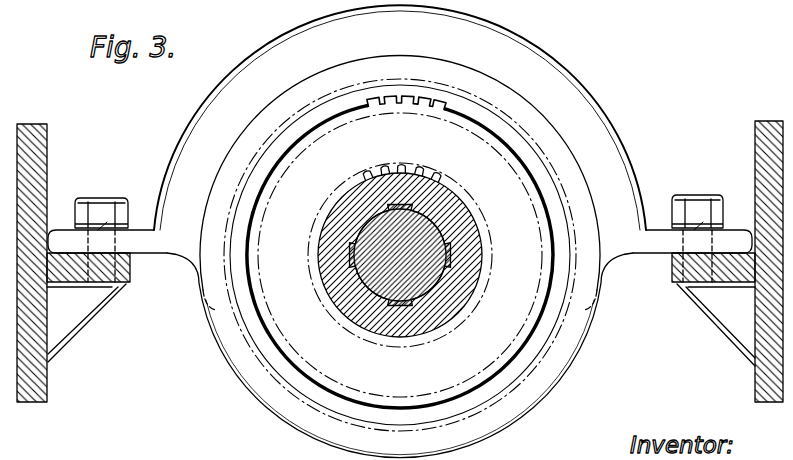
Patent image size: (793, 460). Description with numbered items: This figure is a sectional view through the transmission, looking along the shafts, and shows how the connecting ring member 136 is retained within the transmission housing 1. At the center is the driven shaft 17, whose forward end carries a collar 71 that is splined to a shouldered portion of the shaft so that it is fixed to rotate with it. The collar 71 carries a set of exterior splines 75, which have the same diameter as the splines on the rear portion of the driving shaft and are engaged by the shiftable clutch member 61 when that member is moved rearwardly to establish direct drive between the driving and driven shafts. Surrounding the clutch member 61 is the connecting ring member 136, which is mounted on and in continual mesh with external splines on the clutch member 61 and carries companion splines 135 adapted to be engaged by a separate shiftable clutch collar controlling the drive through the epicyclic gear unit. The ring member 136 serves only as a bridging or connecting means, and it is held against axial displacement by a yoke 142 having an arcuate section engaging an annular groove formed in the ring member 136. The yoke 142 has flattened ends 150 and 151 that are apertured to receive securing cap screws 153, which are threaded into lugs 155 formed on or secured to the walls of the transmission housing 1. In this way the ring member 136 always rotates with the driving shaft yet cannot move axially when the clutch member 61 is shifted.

The transmission housing 1 is at (52, 144).
The yoke 142 is at (533, 55).
The connecting ring member 136 is at (530, 120).
The companion splines 135 is at (437, 106).
The shiftable clutch member 61 is at (400, 233).
The exterior splines 75 is at (420, 168).
The driven shaft 17 is at (362, 262).
The collar 71 is at (395, 238).
The flattened end 150 is at (62, 222).
The securing cap screws 153 is at (105, 205).
The flattened end 151 is at (735, 229).
The lugs 155 is at (117, 287).